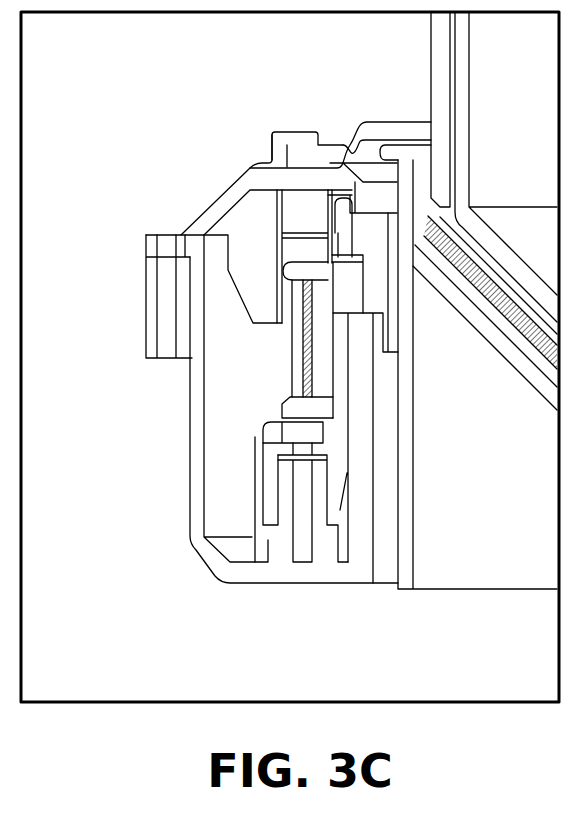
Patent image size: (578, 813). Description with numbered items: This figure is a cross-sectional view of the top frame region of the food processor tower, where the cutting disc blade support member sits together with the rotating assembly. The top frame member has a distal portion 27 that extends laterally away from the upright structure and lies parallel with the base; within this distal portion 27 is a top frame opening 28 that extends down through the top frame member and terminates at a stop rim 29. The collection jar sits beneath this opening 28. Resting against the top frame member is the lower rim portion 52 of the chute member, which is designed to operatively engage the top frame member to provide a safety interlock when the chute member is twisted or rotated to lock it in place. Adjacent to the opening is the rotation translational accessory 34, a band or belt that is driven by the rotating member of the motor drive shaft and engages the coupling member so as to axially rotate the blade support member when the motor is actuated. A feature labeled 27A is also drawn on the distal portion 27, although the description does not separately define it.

The distal portion 27 is at (202, 215).
The bracket tab 27A is at (292, 133).
The lower rim portion 52 is at (363, 123).
The rotation translational accessory 34 is at (292, 357).
The top frame opening 28 is at (358, 578).
The stop rim 29 is at (388, 578).